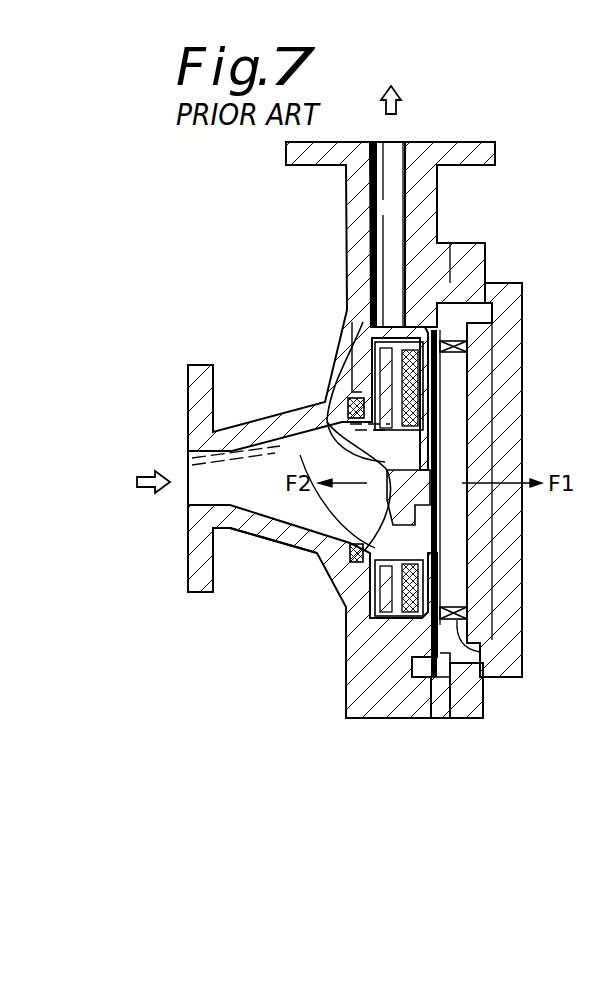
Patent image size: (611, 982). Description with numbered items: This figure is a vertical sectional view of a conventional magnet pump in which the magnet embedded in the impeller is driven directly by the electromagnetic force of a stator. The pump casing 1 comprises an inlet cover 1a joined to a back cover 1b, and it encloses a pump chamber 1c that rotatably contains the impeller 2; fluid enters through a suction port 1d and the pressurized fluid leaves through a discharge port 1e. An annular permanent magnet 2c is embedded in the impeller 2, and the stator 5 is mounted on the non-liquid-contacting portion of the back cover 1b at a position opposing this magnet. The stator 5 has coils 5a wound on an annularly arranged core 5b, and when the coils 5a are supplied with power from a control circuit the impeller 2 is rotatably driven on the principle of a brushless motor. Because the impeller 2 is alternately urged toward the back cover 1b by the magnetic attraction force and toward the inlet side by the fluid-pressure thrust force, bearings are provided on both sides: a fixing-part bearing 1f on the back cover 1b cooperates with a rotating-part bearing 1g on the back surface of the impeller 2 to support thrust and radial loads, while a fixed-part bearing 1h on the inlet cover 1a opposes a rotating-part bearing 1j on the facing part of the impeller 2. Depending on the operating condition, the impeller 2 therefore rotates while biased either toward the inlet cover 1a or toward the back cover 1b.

The pump casing 1 is at (410, 718).
The inlet cover 1a is at (262, 538).
The back cover 1b is at (440, 718).
The pump chamber 1c is at (370, 590).
The suction port 1d is at (188, 503).
The discharge port 1e is at (400, 142).
The fixing-part bearing 1f is at (340, 433).
The rotating-part bearing 1g is at (324, 402).
The fixed-part bearing 1h is at (350, 556).
The mechanical seal 1j is at (385, 600).
The impeller 2 is at (392, 628).
The annular permanent magnet 2c is at (412, 640).
The stator 5 is at (482, 312).
The coils 5a is at (484, 676).
The core 5b is at (498, 641).